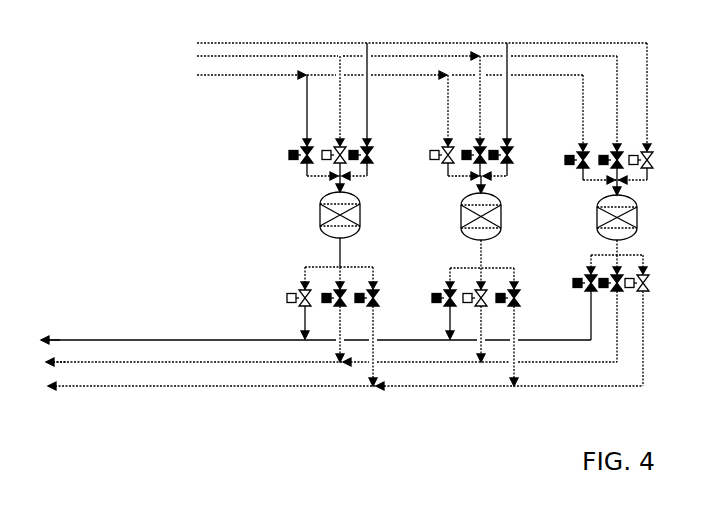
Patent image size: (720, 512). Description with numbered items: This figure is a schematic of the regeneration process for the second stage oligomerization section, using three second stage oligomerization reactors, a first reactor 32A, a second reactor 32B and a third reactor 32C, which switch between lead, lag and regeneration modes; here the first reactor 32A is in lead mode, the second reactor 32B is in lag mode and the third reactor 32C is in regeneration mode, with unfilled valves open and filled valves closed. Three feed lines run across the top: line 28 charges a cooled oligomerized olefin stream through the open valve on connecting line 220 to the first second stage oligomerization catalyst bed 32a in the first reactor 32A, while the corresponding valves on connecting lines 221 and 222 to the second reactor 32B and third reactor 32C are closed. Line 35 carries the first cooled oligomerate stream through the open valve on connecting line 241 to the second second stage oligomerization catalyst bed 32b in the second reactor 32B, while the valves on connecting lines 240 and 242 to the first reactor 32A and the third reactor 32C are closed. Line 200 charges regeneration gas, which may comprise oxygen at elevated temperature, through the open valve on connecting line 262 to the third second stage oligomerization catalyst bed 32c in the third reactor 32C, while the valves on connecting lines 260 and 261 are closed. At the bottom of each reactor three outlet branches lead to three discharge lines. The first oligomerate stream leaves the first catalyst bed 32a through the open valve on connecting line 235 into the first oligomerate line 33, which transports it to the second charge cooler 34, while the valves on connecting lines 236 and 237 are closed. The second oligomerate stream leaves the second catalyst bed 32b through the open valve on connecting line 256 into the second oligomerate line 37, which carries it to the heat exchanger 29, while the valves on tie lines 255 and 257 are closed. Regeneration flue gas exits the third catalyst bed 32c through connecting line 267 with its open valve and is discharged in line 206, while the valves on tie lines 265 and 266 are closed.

The regeneration gas line 200 is at (265, 41).
The cooled oligomerized olefin line 28 is at (232, 58).
The first cooled oligomerate line 35 is at (232, 77).
The connecting line 240 is at (307, 121).
The connecting line 220 is at (340, 116).
The connecting line 260 is at (367, 118).
The connecting line 241 is at (448, 121).
The connecting line 221 is at (480, 116).
The connecting line 261 is at (507, 120).
The connecting line 242 is at (583, 124).
The connecting line 222 is at (617, 116).
The connecting line 262 is at (647, 129).
The first reactor 32A is at (325, 196).
The first second stage oligomerization catalyst bed 32a is at (355, 208).
The second reactor 32B is at (499, 190).
The second second stage oligomerization catalyst bed 32b is at (461, 210).
The third reactor 32C is at (632, 197).
The third second stage oligomerization catalyst bed 32c is at (598, 211).
The connecting line 235 is at (305, 273).
The connecting line 236 is at (450, 276).
The connecting line 237 is at (589, 265).
The tie line 255 is at (340, 349).
The connecting line 256 is at (481, 349).
The tie line 257 is at (617, 355).
The tie line 265 is at (373, 373).
The tie line 266 is at (514, 373).
The connecting line 267 is at (645, 371).
The first oligomerate line 33 is at (240, 339).
The second oligomerate line 37 is at (227, 361).
The regeneration flue gas line 206 is at (206, 385).
The second charge cooler 34 is at (39, 341).
The heat exchanger 29 is at (46, 362).